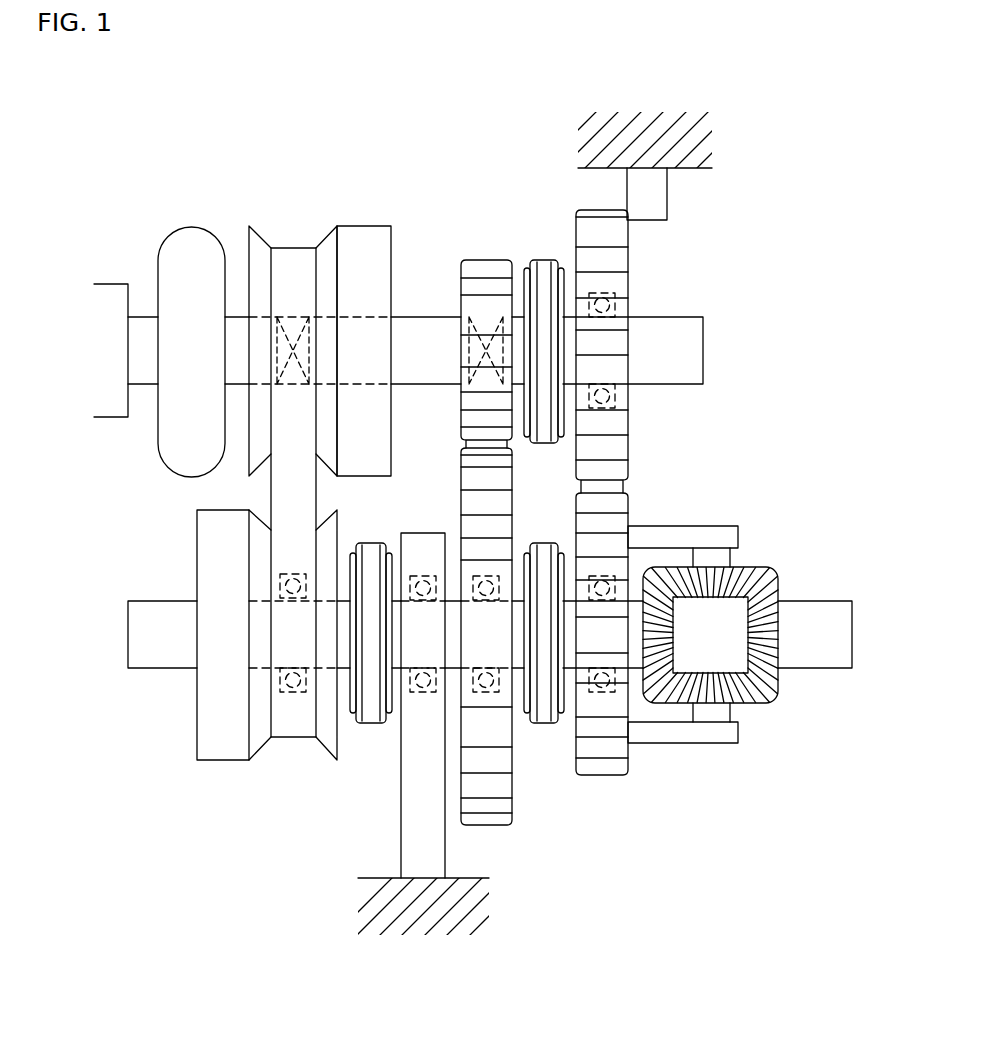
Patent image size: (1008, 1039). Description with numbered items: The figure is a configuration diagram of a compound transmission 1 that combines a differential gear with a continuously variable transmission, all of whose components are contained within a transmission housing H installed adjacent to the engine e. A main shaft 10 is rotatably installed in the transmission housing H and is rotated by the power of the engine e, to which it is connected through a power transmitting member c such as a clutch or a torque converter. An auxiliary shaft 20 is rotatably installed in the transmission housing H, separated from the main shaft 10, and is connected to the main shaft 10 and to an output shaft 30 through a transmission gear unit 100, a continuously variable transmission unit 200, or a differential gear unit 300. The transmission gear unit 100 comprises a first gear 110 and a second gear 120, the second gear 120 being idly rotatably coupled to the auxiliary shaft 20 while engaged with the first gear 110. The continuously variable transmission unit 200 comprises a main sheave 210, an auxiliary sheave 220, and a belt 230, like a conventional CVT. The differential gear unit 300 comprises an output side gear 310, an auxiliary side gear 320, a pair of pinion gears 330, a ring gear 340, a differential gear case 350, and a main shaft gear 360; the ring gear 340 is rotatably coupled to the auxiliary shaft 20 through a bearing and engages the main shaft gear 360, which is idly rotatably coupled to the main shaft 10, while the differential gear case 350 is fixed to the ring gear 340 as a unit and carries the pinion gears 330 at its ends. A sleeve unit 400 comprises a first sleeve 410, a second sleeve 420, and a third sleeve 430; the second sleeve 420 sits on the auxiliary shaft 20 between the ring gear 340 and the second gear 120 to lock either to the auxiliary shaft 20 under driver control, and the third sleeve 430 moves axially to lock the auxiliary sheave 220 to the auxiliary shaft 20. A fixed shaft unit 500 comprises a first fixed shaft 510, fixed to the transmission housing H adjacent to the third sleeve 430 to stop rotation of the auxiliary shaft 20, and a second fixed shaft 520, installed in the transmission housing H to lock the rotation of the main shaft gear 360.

The compound transmission 1 is at (118, 94).
The main shaft 10 is at (685, 357).
The auxiliary shaft 20 is at (170, 660).
The output shaft 30 is at (833, 608).
The transmission gear unit 100 is at (328, 538).
The first gear 110 is at (477, 262).
The second gear 120 is at (491, 817).
The continuously variable transmission unit 200 is at (221, 493).
The main sheave 210 is at (252, 448).
The auxiliary sheave 220 is at (208, 570).
The belt 230 is at (283, 496).
The differential gear unit 300 is at (701, 602).
The output side gear 310 is at (777, 587).
The auxiliary side gear 320 is at (640, 577).
The pinion gears 330 is at (752, 568).
The ring gear 340 is at (600, 767).
The differential gear case 350 is at (667, 735).
The main shaft gear 360 is at (622, 260).
The sleeve unit 400 is at (336, 573).
The first sleeve 410 is at (545, 267).
The second sleeve 420 is at (543, 723).
The third sleeve 430 is at (370, 720).
The fixed shaft unit 500 is at (428, 565).
The first fixed shaft 510 is at (410, 825).
The second fixed shaft 520 is at (660, 195).
The engine e is at (111, 290).
The power transmitting member c is at (192, 243).
The transmission housing H is at (598, 128).